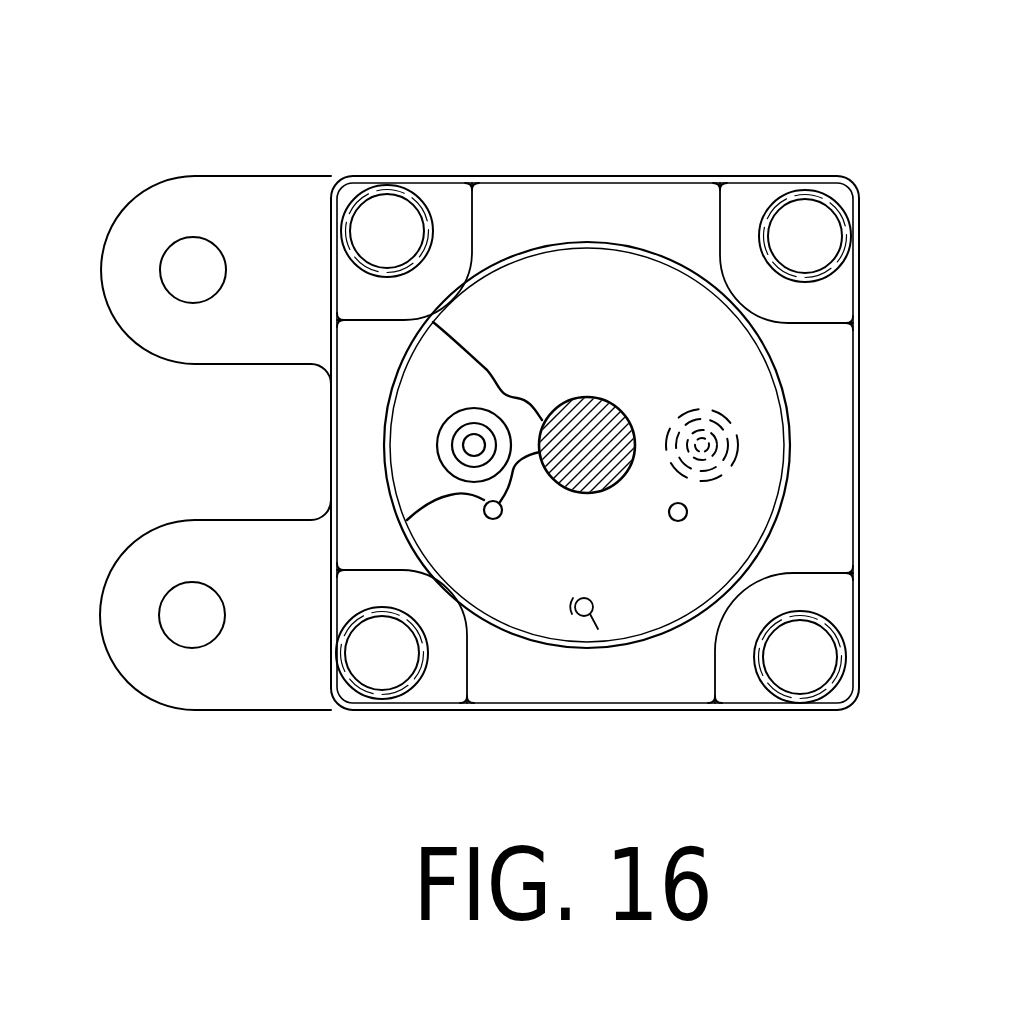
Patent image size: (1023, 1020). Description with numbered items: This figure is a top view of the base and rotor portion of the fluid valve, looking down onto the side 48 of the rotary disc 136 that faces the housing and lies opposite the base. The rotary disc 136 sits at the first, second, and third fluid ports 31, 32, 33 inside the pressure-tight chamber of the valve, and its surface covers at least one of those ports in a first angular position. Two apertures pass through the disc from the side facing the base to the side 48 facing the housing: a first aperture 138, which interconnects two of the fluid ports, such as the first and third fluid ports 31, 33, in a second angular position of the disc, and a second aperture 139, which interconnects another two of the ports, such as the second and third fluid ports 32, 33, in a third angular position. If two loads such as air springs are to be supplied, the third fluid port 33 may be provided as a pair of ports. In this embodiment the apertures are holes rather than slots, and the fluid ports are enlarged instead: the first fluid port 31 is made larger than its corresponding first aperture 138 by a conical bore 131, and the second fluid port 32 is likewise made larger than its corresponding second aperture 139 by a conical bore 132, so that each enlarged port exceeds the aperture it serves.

The rotary disc 136 is at (562, 288).
The side of the disc 48 is at (601, 583).
The second fluid port 32 is at (468, 428).
The conical bore 132 is at (455, 443).
The second aperture 139 is at (485, 507).
The first aperture 138 is at (688, 511).
The conical bore 131 is at (740, 420).
The first fluid port 31 is at (742, 440).
The third fluid port 33 is at (607, 642).